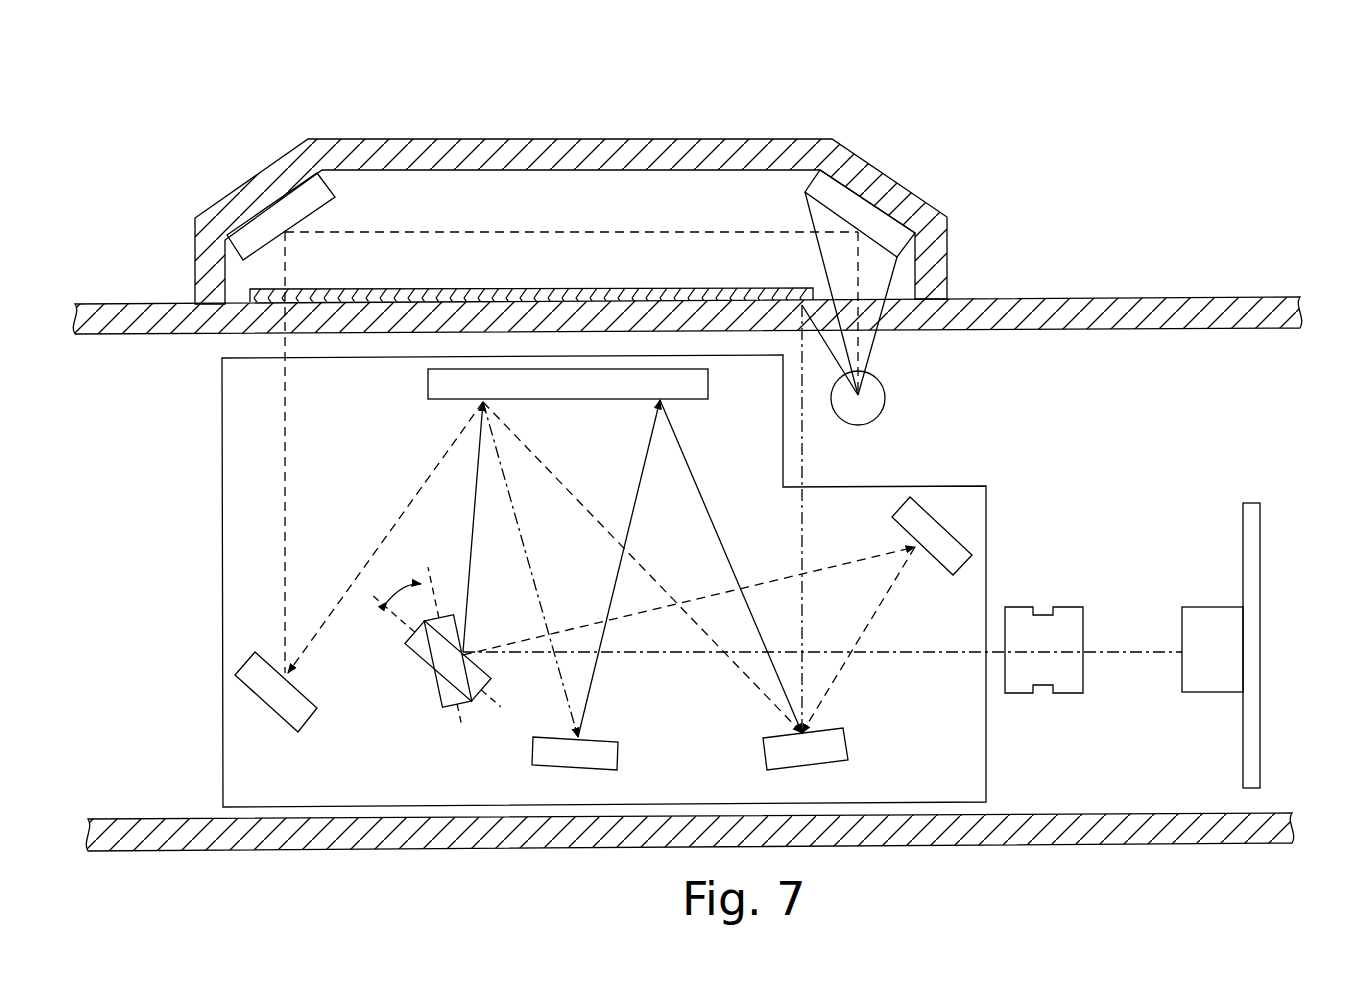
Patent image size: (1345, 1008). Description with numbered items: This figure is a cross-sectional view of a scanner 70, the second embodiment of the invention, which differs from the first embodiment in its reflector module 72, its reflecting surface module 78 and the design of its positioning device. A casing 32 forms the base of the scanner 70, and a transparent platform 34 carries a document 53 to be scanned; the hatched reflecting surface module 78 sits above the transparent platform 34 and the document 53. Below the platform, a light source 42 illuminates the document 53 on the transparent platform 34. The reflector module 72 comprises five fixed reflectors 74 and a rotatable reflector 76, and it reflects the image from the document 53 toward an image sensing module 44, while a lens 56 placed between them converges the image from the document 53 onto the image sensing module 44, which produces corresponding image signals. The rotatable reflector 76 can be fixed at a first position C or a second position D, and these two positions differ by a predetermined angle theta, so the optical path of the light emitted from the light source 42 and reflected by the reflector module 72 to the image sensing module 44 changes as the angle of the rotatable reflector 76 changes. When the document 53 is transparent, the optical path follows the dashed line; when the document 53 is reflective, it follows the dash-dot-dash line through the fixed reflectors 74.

The scanner 70 is at (1120, 115).
The reflecting surface module 78 is at (578, 150).
The transparent platform 34 is at (1062, 305).
The document 53 is at (602, 293).
The reflector module 72 is at (220, 417).
The light source 42 is at (865, 405).
The fixed reflectors 74 is at (430, 387).
The rotatable reflector 76 is at (487, 690).
The lens 56 is at (1065, 625).
The image sensing module 44 is at (1222, 645).
The casing 32 is at (1065, 830).